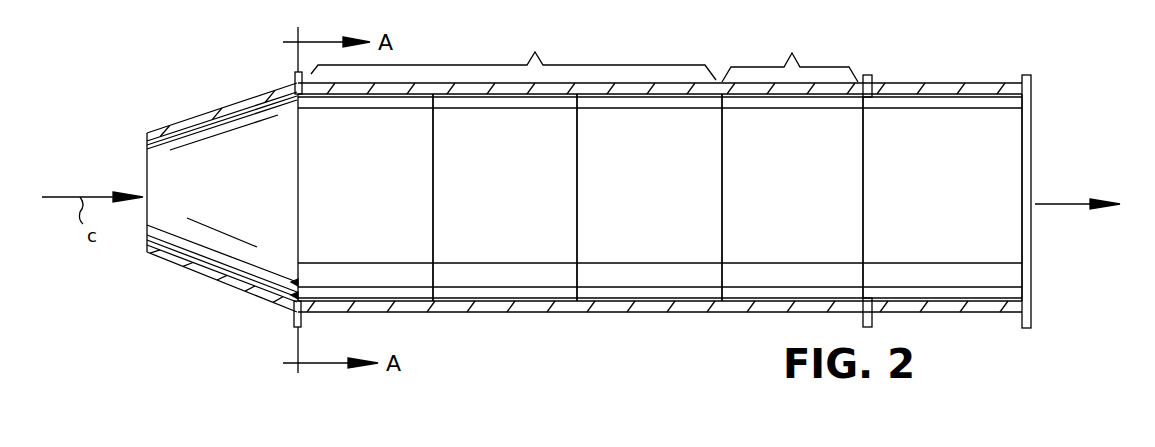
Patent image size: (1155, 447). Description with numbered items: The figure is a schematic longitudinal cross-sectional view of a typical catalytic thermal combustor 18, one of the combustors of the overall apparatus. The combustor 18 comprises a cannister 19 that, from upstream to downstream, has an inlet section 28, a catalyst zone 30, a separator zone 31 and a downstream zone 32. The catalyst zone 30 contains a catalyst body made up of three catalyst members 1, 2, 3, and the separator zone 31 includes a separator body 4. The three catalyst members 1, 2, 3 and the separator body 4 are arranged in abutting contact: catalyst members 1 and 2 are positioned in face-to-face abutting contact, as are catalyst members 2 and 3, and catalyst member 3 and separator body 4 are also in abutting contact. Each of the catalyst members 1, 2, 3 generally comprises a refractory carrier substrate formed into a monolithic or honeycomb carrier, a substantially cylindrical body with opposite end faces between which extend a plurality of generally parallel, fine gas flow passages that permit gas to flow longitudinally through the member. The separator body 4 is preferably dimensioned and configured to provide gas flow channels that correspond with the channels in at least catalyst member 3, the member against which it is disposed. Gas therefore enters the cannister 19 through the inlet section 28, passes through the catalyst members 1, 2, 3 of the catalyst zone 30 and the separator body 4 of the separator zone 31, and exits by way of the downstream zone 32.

The inlet section 28 is at (203, 206).
The catalyst member 1 is at (354, 206).
The catalyst member 2 is at (488, 206).
The catalyst member 3 is at (635, 206).
The separator body 4 is at (772, 206).
The downstream zone 32 is at (923, 206).
The catalyst zone 30 is at (552, 42).
The separator zone 31 is at (793, 56).
The catalytic thermal combustor 18 is at (670, 326).
The cannister 19 is at (526, 322).